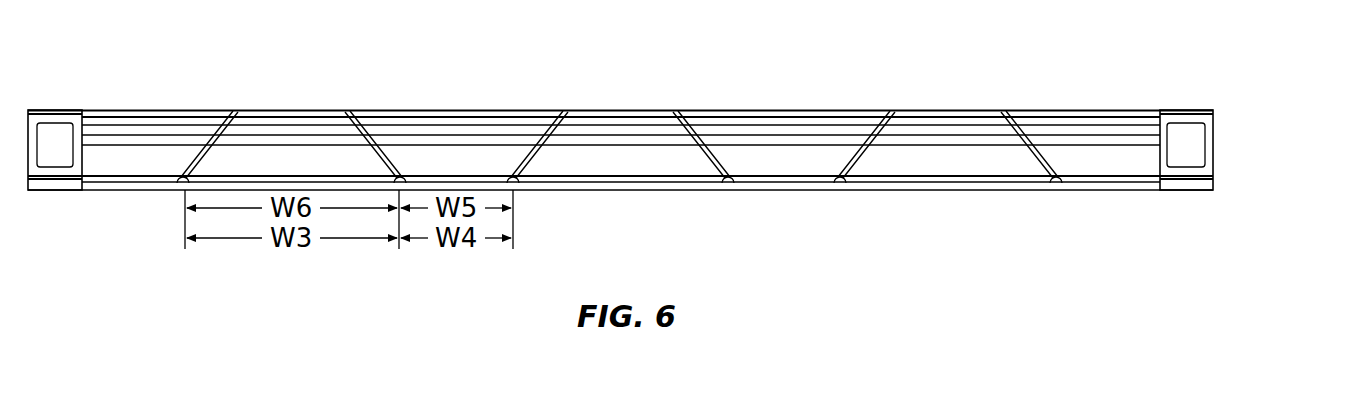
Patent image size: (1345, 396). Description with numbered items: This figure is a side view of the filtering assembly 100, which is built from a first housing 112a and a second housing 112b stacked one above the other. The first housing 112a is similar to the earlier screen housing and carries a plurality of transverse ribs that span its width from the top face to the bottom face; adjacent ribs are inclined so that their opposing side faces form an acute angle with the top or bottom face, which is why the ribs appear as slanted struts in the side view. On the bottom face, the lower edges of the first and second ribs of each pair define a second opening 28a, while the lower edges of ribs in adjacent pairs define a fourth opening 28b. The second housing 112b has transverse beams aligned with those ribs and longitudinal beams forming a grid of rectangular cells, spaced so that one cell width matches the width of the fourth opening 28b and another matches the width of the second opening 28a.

The filtering assembly 100 is at (1142, 47).
The first housing 112a is at (1220, 135).
The second housing 112b is at (1220, 183).
The second opening 28a is at (648, 162).
The fourth opening 28b is at (770, 162).